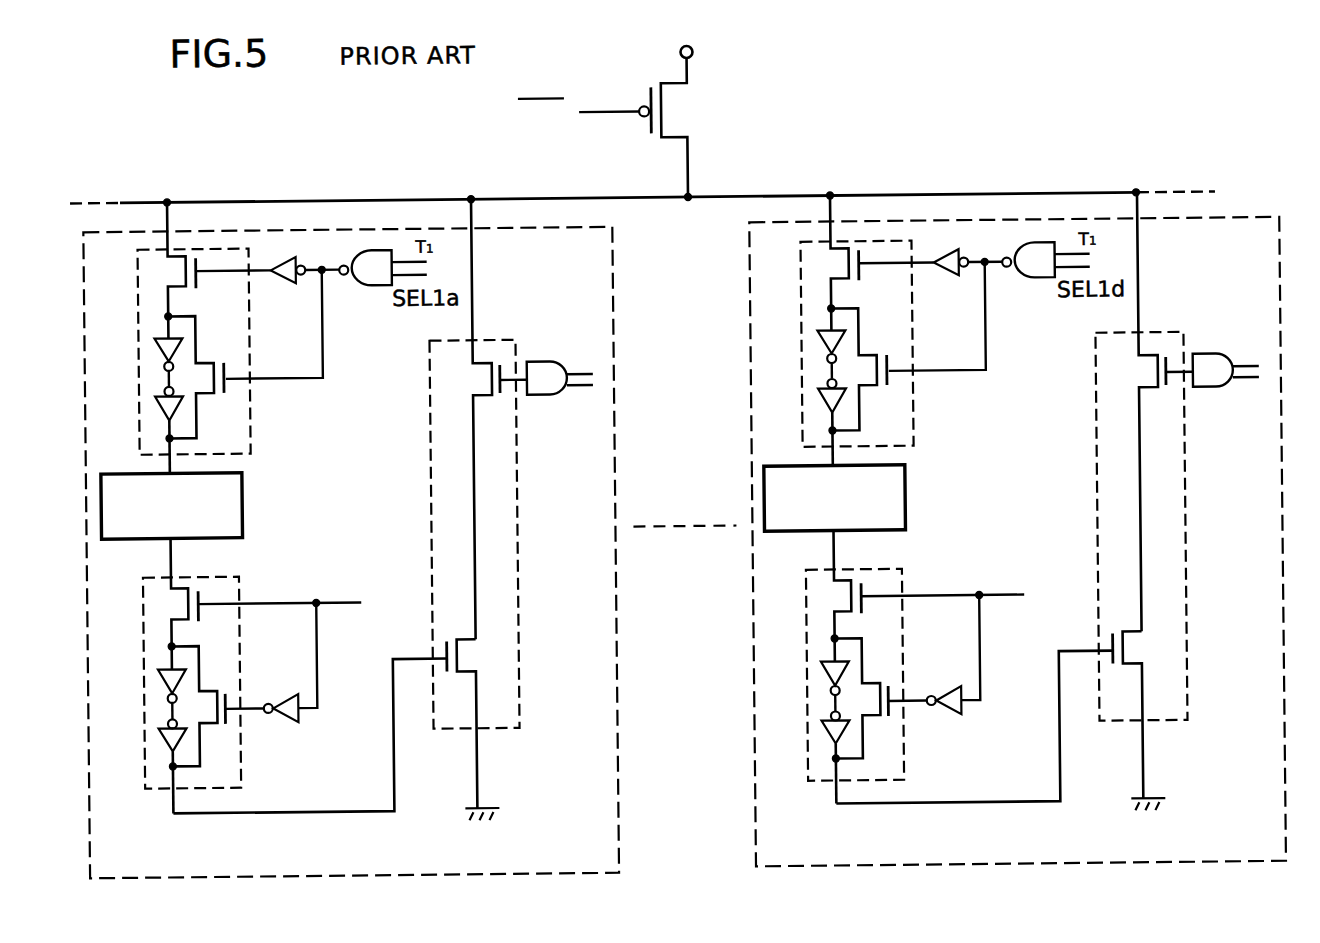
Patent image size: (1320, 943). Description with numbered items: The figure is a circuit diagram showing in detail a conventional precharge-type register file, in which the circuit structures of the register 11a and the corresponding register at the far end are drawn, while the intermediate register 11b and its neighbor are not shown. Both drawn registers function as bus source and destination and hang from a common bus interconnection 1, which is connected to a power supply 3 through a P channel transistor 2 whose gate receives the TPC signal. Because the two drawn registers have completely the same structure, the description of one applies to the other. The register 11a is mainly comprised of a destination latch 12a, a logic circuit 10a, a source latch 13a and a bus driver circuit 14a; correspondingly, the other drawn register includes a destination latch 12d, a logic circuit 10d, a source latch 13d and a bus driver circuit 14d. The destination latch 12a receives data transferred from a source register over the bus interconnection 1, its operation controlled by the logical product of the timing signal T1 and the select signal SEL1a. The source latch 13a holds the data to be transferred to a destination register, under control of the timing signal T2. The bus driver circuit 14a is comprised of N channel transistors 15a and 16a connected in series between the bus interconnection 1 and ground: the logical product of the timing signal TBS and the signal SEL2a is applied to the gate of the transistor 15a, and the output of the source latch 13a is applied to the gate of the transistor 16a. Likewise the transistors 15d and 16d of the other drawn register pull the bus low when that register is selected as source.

The bus interconnection 1 is at (742, 196).
The P channel transistor 2 is at (684, 118).
The power supply 3 is at (697, 53).
The logic circuit 10a is at (239, 492).
The logic circuit 10d is at (867, 497).
The register 11a is at (611, 334).
The register 11b is at (989, 542).
The destination latch 12a is at (250, 414).
The destination latch 12d is at (902, 330).
The source latch 13a is at (237, 754).
The source latch 13d is at (931, 666).
The bus driver circuit 14a is at (516, 528).
The bus driver circuit 14d is at (1176, 526).
The N channel transistor 15a is at (514, 419).
The N channel transistor 15d is at (1183, 411).
The N channel transistor 16a is at (483, 730).
The N channel transistor 16d is at (1148, 721).